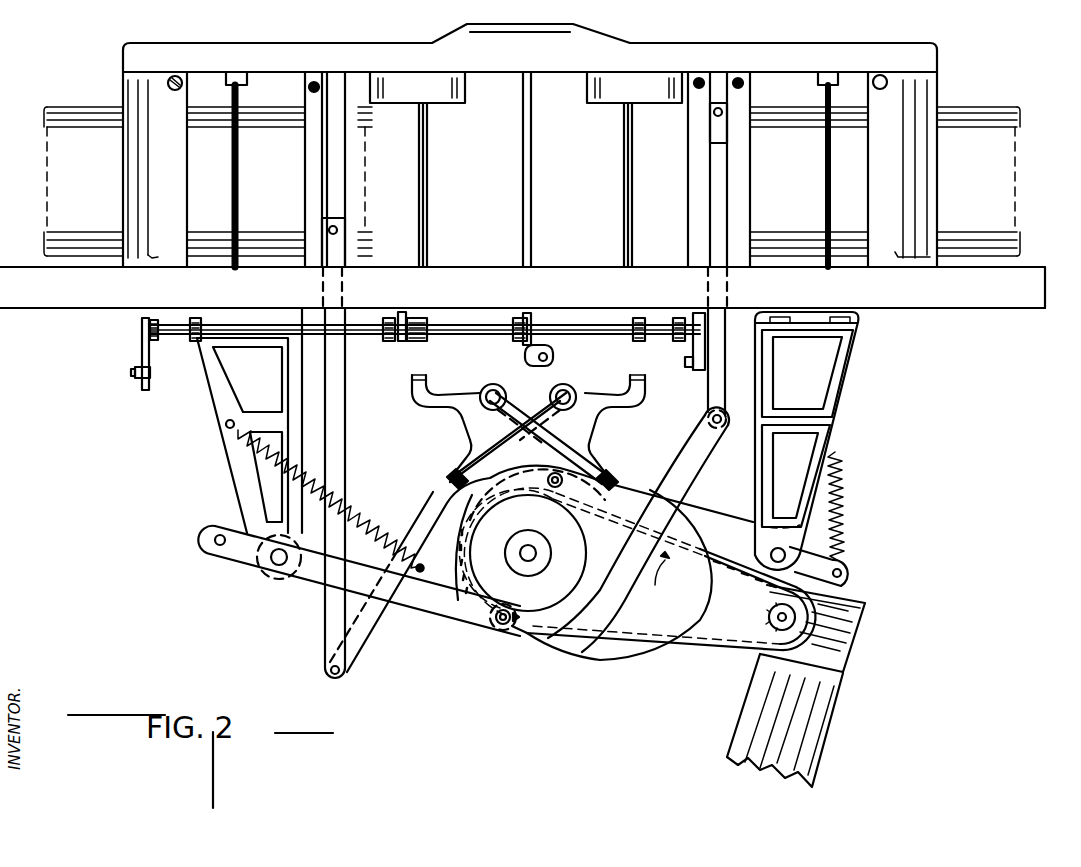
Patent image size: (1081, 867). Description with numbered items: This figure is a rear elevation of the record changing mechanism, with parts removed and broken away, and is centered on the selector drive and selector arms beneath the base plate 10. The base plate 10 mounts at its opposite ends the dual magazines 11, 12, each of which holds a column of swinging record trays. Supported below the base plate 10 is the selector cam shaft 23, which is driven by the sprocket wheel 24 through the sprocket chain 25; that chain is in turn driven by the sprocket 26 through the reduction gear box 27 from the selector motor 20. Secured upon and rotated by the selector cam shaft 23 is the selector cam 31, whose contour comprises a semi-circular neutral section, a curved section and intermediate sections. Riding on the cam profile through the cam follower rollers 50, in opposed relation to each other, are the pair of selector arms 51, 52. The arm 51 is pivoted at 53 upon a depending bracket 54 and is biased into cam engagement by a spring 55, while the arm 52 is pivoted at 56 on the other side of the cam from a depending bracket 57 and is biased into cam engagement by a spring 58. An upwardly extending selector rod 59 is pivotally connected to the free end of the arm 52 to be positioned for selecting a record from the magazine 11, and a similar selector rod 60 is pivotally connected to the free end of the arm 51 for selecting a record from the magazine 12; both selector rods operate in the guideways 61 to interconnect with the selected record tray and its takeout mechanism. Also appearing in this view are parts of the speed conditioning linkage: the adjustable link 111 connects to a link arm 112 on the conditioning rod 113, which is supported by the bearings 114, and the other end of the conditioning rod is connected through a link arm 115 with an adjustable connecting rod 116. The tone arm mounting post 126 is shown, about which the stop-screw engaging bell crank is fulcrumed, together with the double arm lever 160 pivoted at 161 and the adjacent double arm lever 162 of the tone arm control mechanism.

The base plate 10 is at (963, 298).
The magazine 11 is at (127, 81).
The magazine 12 is at (927, 78).
The selector motor 20 is at (828, 693).
The selector cam shaft 23 is at (524, 558).
The sprocket wheel 24 is at (466, 580).
The sprocket chain 25 is at (705, 630).
The sprocket 26 is at (768, 630).
The reduction gear box 27 is at (852, 623).
The selector cam 31 is at (600, 650).
The cam follower rollers 50 is at (551, 475).
The selector arm 51 is at (522, 633).
The selector arm 52 is at (450, 505).
The pivot 53 is at (279, 566).
The depending bracket 54 is at (235, 466).
The spring 55 is at (350, 502).
The pivot 56 is at (786, 553).
The depending bracket 57 is at (848, 372).
The spring 58 is at (838, 492).
The selector rod 59 is at (343, 420).
The selector rod 60 is at (715, 385).
The guideways 61 is at (316, 198).
The adjustable link 111 is at (696, 362).
The link arm 112 is at (393, 341).
The conditioning rod 113 is at (456, 334).
The bearings 114 is at (198, 341).
The link arm 115 is at (143, 345).
The adjustable connecting rod 116 is at (135, 381).
The tone arm mounting post 126 is at (425, 238).
The double arm lever 160 is at (473, 416).
The pivot 161 is at (565, 392).
The double arm lever 162 is at (608, 403).